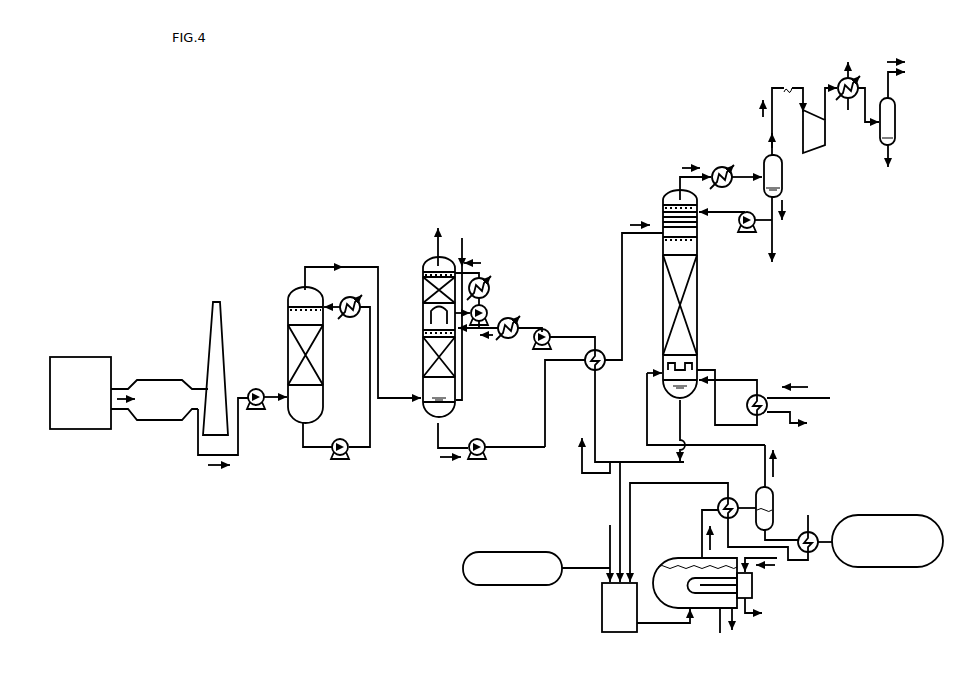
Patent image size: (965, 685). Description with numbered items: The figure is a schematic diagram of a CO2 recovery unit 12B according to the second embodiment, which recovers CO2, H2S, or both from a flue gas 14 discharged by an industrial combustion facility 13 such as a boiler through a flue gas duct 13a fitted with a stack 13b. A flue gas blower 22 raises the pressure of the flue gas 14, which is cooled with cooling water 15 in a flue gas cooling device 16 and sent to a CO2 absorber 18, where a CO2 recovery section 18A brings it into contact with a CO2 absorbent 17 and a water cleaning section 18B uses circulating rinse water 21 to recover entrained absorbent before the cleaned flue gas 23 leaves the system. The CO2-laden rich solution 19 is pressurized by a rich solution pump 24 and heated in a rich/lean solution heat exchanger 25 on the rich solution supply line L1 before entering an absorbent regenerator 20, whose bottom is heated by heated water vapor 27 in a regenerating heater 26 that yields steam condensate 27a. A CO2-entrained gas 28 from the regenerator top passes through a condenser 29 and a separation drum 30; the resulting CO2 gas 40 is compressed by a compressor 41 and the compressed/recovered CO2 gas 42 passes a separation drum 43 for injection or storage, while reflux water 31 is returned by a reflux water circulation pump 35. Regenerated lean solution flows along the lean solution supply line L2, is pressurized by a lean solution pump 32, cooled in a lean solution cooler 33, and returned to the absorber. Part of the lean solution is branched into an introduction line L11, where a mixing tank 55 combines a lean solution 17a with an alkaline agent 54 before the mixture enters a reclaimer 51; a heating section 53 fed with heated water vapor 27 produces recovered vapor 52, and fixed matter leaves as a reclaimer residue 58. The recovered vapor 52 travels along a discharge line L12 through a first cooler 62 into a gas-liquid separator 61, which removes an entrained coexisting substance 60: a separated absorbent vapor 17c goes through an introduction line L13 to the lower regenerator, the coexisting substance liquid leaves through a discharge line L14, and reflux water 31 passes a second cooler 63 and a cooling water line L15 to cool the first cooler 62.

The CO2 recovery unit 12B is at (467, 94).
The industrial combustion facility 13 is at (95, 355).
The flue gas duct 13a is at (157, 379).
The stack 13b is at (210, 322).
The flue gas 14 is at (121, 388).
The cooling water 15 is at (342, 318).
The flue gas cooling device 16 is at (288, 297).
The CO2 absorbent 17 is at (503, 318).
The lean solution 17a is at (605, 540).
The separated absorbent vapor 17c is at (778, 462).
The CO2 absorber 18 is at (446, 256).
The CO2 recovery section 18A is at (458, 352).
The water cleaning section 18B is at (423, 292).
The rich solution 19 is at (445, 463).
The absorbent regenerator 20 is at (668, 190).
The circulating rinse water 21 is at (481, 262).
The flue gas blower 22 is at (256, 388).
The flue gas 23 is at (436, 228).
The rich solution pump 24 is at (481, 457).
The rich/lean solution heat exchanger 25 is at (590, 370).
The regenerating heater 26 is at (758, 394).
The heated water vapor 27 is at (800, 385).
The steam condensate 27a is at (791, 516).
The CO2-entrained gas 28 is at (692, 174).
The condenser 29 is at (720, 166).
The separation drum 30 is at (784, 178).
The reflux water 31 is at (788, 208).
The lean solution pump 32 is at (549, 330).
The lean solution cooler 33 is at (514, 340).
The reflux water circulation pump 35 is at (744, 230).
The CO2 gas 40 is at (760, 105).
The compressor 41 is at (822, 150).
The compressed/recovered CO2 gas 42 is at (887, 60).
The separation drum 43 is at (896, 116).
The reclaimer 51 is at (657, 561).
The recovered vapor 52 is at (731, 536).
The heating section 53 is at (718, 615).
The alkaline agent 54 is at (502, 552).
The mixing tank 55 is at (602, 607).
The reclaimer residue 58 is at (740, 628).
The coexisting substance 60 is at (888, 515).
The gas-liquid separator 61 is at (780, 492).
The first cooler 62 is at (735, 498).
The second cooler 63 is at (815, 552).
The rich solution supply line L1 is at (529, 445).
The lean solution supply line L2 is at (597, 415).
The introduction line L11 is at (618, 505).
The discharge line L12 is at (702, 528).
The introduction line L13 is at (700, 448).
The discharge line L14 is at (778, 541).
The cooling water line L15 is at (790, 560).